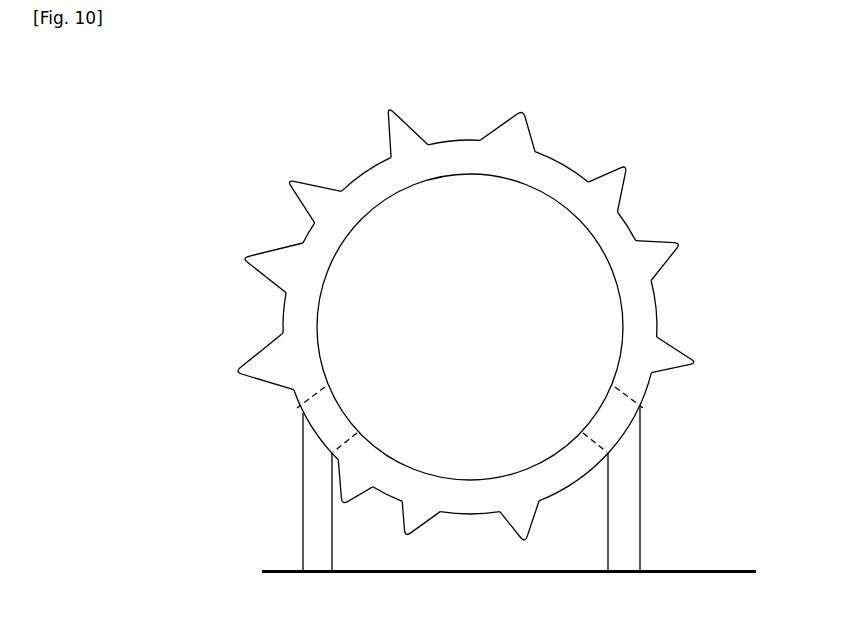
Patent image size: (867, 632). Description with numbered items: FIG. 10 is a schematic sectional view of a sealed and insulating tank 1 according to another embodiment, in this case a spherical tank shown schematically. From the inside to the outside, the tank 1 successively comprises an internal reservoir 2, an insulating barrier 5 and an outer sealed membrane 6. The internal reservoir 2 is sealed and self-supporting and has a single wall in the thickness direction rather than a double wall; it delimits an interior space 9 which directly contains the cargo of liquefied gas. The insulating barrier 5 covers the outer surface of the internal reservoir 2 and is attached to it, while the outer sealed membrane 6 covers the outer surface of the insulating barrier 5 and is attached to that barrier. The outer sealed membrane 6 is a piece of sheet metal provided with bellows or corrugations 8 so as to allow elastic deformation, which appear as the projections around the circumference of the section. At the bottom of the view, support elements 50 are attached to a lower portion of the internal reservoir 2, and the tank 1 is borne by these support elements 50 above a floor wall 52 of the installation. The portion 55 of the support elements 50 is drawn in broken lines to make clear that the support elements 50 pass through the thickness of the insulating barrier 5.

The tank 1 is at (481, 288).
The internal reservoir 2 is at (541, 174).
The insulating barrier 5 is at (631, 218).
The outer sealed membrane 6 is at (292, 228).
The corrugations 8 is at (387, 128).
The interior space 9 is at (590, 332).
The support element 50 is at (303, 473).
The floor wall 52 is at (712, 570).
The portion of the support elements 55 is at (322, 389).